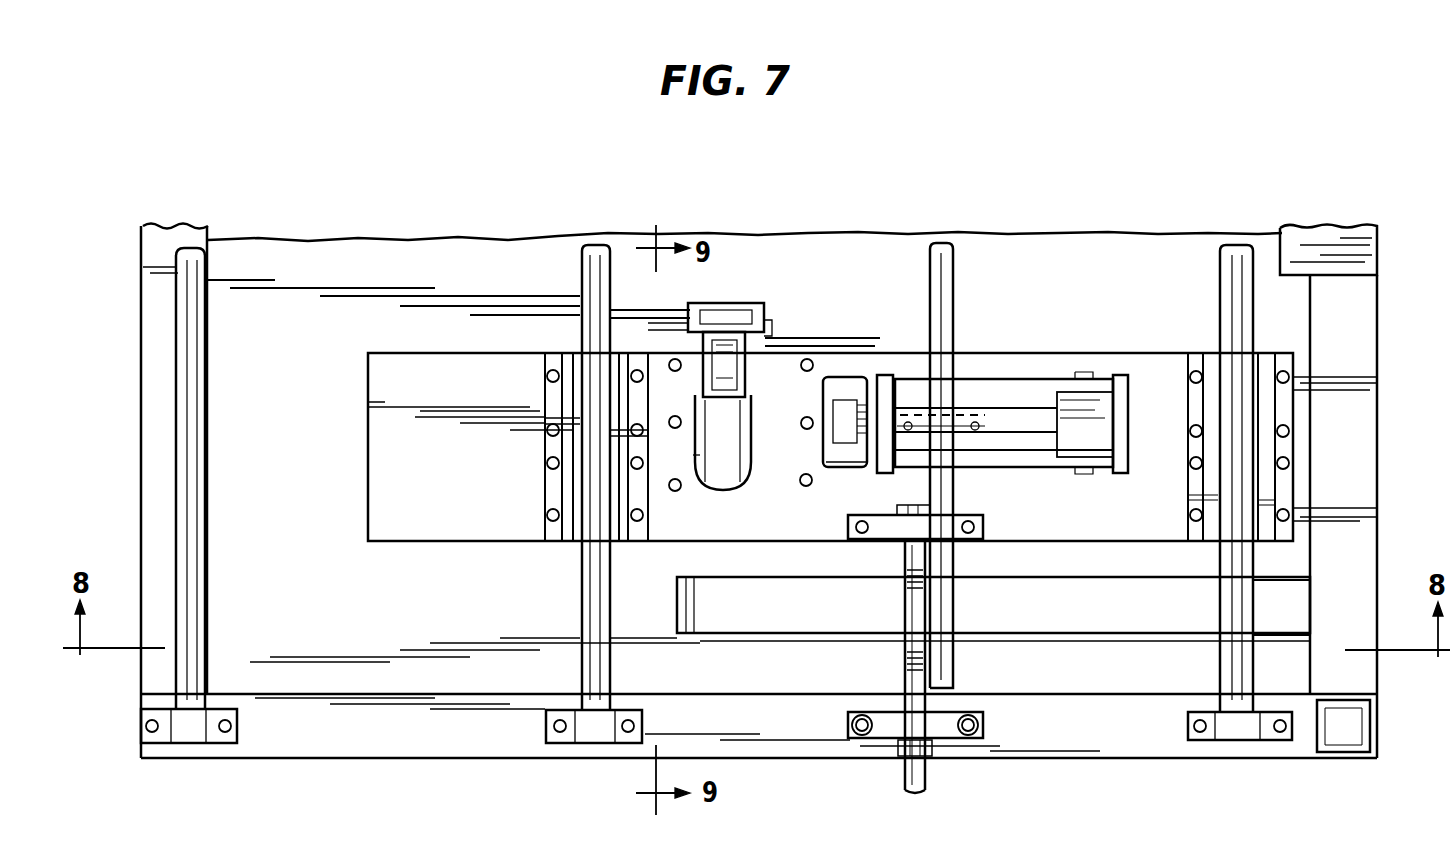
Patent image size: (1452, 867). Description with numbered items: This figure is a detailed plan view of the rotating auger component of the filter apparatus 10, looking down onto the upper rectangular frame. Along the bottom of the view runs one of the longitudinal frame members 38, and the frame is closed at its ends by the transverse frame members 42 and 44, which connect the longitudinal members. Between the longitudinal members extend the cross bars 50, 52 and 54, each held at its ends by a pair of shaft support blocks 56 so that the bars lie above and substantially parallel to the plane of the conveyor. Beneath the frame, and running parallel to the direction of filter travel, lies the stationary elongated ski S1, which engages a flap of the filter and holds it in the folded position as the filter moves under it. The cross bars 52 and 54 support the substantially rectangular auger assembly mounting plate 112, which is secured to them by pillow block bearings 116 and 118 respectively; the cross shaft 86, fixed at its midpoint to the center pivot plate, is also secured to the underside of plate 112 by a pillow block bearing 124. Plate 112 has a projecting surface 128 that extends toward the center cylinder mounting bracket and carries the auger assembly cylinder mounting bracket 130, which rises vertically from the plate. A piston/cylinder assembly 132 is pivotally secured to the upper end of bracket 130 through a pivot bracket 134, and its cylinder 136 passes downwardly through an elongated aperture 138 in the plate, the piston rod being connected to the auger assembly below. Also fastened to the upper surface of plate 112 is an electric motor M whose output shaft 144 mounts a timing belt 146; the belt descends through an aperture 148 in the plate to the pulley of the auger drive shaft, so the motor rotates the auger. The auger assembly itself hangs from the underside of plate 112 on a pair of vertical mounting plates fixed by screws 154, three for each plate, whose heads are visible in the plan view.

The apparatus 10 is at (137, 797).
The longitudinal frame member 38 is at (346, 740).
The transverse frame member 42 is at (160, 297).
The transverse frame member 44 is at (1367, 320).
The cross bar 50 is at (208, 322).
The cross bar 52 is at (582, 282).
The cross bar 54 is at (1220, 292).
The shaft support block 56 is at (141, 738).
The cross shaft 86 is at (953, 314).
The auger assembly mounting plate 112 is at (1154, 358).
The pillow block bearing 116 is at (569, 358).
The pillow block bearing 118 is at (1268, 363).
The pillow block bearing 124 is at (990, 408).
The projecting surface 128 is at (685, 330).
The auger assembly cylinder mounting bracket 130 is at (712, 298).
The piston/cylinder assembly 132 is at (701, 396).
The pivot bracket 134 is at (770, 334).
The cylinder 136 is at (742, 464).
The elongated aperture 138 is at (695, 482).
The output shaft 144 is at (887, 394).
The timing belt 146 is at (848, 380).
The aperture 148 is at (846, 466).
The screws 154 is at (674, 364).
The electric motor M is at (1040, 379).
The ski S1 is at (1043, 606).